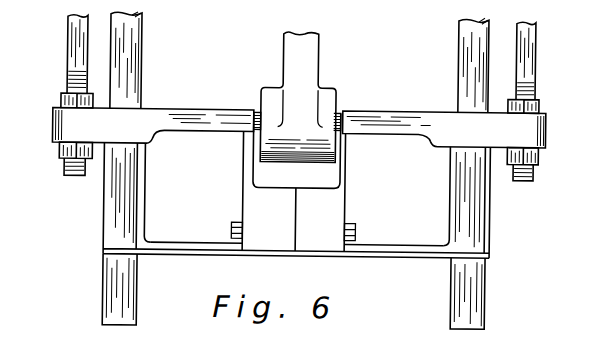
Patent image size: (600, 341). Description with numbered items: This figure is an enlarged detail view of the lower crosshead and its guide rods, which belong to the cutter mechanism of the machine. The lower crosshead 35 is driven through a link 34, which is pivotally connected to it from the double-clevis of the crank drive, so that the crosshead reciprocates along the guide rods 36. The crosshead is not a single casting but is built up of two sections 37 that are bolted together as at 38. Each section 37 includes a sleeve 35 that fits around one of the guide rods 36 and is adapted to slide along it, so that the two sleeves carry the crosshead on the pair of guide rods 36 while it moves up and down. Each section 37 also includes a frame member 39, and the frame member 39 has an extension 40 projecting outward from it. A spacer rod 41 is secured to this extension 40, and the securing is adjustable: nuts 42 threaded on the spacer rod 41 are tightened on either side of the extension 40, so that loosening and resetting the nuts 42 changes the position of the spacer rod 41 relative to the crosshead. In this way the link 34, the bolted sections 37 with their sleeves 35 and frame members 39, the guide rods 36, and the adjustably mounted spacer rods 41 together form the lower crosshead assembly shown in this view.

The link 34 is at (306, 57).
The sleeve 35 is at (143, 168).
The guide rod 36 is at (137, 39).
The section 37 is at (293, 191).
The bolt 38 is at (231, 226).
The frame member 39 is at (210, 140).
The extension 40 is at (56, 132).
The spacer rod 41 is at (68, 42).
The nut 42 is at (61, 104).